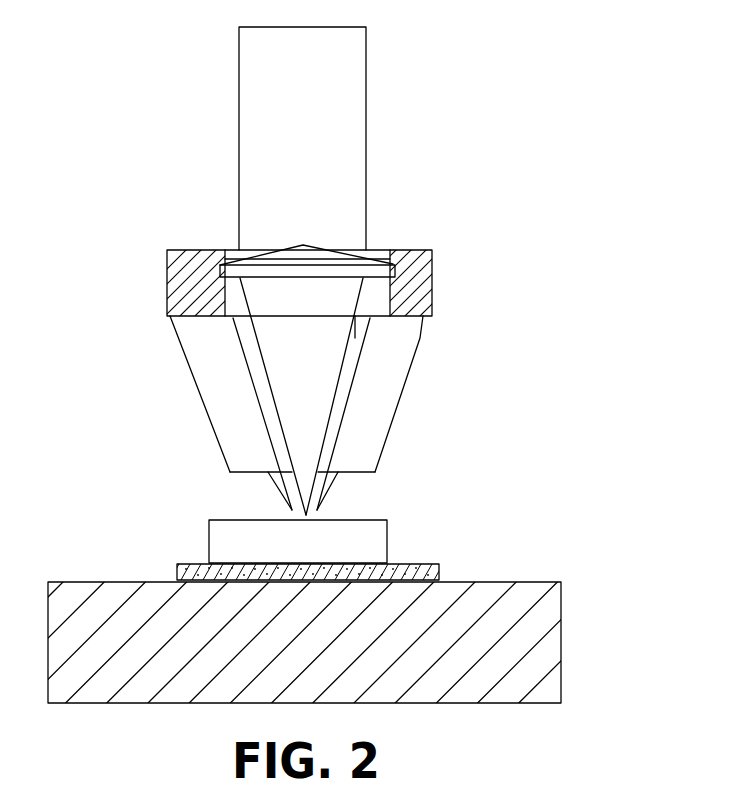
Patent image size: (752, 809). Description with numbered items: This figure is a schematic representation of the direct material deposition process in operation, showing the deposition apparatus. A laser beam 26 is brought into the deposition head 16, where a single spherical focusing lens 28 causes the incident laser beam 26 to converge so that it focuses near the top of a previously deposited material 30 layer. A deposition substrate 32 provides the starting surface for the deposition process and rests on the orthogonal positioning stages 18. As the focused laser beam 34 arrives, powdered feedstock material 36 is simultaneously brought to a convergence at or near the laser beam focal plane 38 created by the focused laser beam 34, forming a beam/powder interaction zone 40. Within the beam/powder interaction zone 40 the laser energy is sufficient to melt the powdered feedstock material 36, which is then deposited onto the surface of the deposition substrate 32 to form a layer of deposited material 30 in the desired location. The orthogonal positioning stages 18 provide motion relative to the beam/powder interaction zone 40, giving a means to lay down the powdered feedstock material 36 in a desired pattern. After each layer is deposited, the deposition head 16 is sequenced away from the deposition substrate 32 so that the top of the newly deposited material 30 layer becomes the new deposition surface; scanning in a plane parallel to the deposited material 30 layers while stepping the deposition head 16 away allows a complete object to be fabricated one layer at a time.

The deposition head 16 is at (198, 390).
The orthogonal positioning stages 18 is at (561, 625).
The laser beam 26 is at (367, 143).
The single spherical focusing lens 28 is at (350, 260).
The deposited material 30 is at (209, 548).
The deposition substrate 32 is at (440, 569).
The focused laser beam 34 is at (355, 338).
The powdered feedstock material 36 is at (288, 494).
The laser beam focal plane 38 is at (313, 515).
The beam/powder interaction zone 40 is at (442, 511).